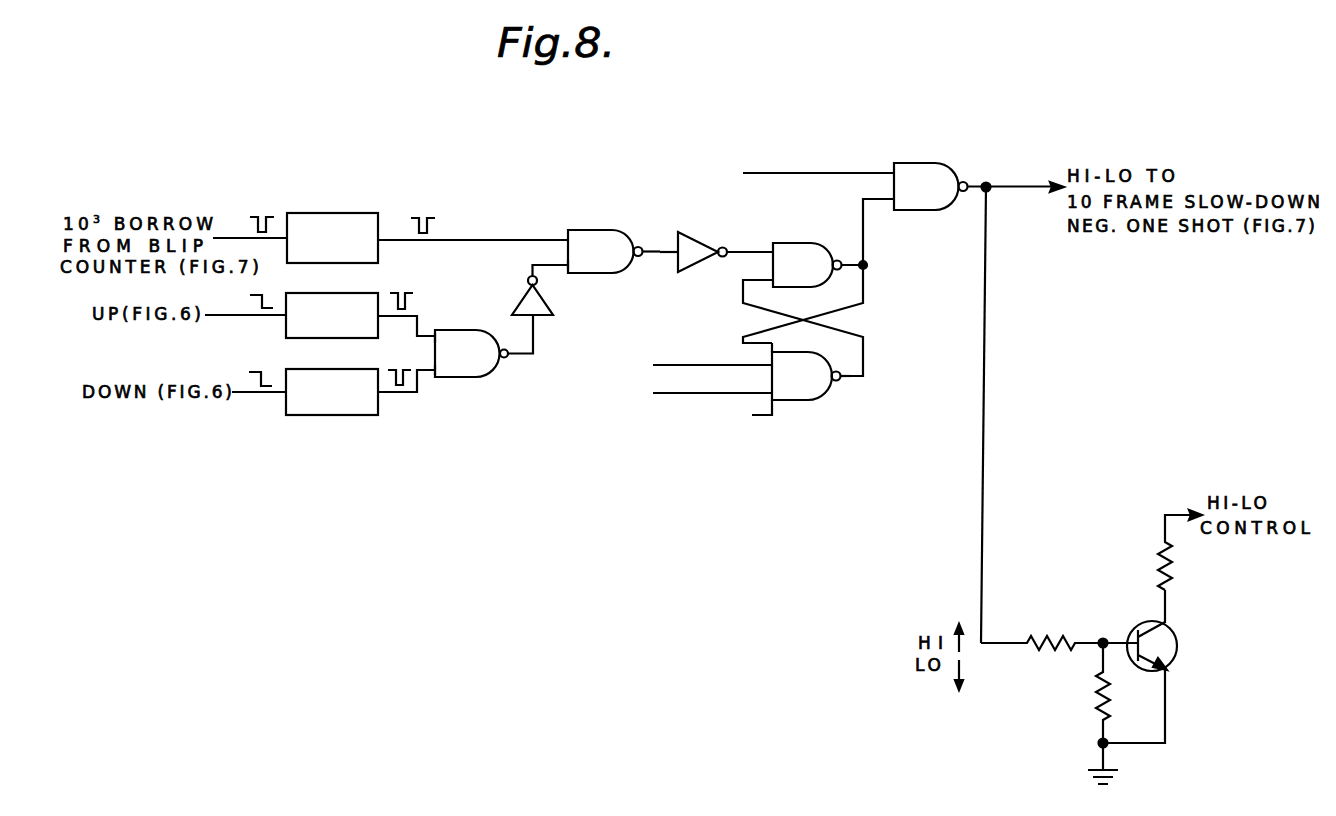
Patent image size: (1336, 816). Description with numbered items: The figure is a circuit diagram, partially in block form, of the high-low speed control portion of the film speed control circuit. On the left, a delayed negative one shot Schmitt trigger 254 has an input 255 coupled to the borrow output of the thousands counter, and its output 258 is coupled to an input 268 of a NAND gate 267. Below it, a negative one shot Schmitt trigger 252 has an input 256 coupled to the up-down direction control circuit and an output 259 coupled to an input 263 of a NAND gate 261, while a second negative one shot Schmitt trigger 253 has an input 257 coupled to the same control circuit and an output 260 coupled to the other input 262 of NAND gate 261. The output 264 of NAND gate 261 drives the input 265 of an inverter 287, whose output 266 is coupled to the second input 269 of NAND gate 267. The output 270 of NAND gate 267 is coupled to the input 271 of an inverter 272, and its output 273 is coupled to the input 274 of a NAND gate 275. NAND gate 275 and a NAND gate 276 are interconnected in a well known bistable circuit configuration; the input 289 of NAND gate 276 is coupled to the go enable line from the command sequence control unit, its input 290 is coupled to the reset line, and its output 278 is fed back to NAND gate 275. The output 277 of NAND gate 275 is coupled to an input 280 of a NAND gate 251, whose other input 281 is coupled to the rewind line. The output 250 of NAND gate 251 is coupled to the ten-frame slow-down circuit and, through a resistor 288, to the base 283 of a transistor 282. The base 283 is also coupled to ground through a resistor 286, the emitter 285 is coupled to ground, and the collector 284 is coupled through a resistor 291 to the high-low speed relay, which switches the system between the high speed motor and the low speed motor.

The output of NAND gate 251 250 is at (988, 181).
The NAND gate 251 is at (930, 170).
The negative one shot Schmitt trigger 252 is at (320, 294).
The negative one shot Schmitt trigger 253 is at (304, 352).
The delayed negative one shot Schmitt trigger 254 is at (340, 213).
The input of delayed negative one shot Schmitt trigger 254 255 is at (240, 238).
The input of Schmitt trigger 252 256 is at (272, 315).
The input of Schmitt trigger 253 257 is at (284, 400).
The output of delayed negative one shot Schmitt trigger 254 258 is at (380, 246).
The output of Schmitt trigger 252 259 is at (380, 322).
The output of Schmitt trigger 253 260 is at (381, 396).
The NAND gate 261 is at (495, 370).
The input of NAND gate 261 262 is at (470, 377).
The input of NAND gate 261 263 is at (447, 331).
The output of NAND gate 261 264 is at (514, 357).
The input of inverter 287 265 is at (535, 325).
The output of inverter 287 266 is at (538, 283).
The NAND gate 267 is at (583, 230).
The input of NAND gate 267 268 is at (568, 238).
The input of NAND gate 267 269 is at (568, 264).
The output of NAND gate 267 270 is at (640, 247).
The input of inverter 272 271 is at (683, 268).
The inverter 272 is at (697, 232).
The output of inverter 272 273 is at (724, 247).
The input of NAND gate 275 274 is at (778, 243).
The NAND gate 275 is at (774, 287).
The NAND gate 276 is at (800, 400).
The output of NAND gate 275 277 is at (880, 265).
The output of NAND gate 276 278 is at (846, 377).
The input of NAND gate 251 280 is at (890, 201).
The input of NAND gate 251 281 is at (890, 173).
The transistor 282 is at (1170, 662).
The base of transistor 282 283 is at (1135, 634).
The collector of transistor 282 284 is at (1168, 608).
The emitter of transistor 282 285 is at (1168, 690).
The resistor 286 is at (1100, 694).
The inverter 287 is at (542, 303).
The resistor 288 is at (1057, 632).
The input of NAND gate 276 289 is at (770, 362).
The input of NAND gate 276 290 is at (770, 395).
The resistor 291 is at (1159, 575).